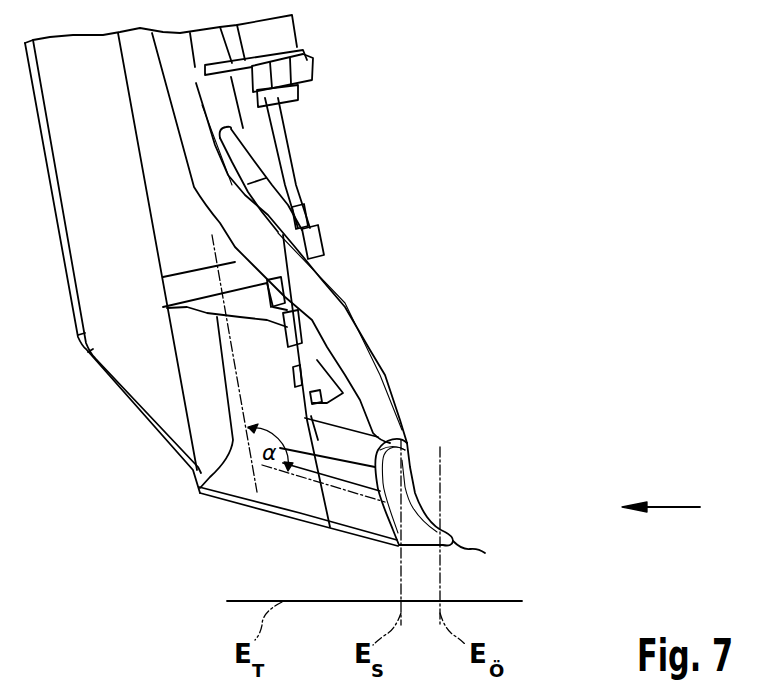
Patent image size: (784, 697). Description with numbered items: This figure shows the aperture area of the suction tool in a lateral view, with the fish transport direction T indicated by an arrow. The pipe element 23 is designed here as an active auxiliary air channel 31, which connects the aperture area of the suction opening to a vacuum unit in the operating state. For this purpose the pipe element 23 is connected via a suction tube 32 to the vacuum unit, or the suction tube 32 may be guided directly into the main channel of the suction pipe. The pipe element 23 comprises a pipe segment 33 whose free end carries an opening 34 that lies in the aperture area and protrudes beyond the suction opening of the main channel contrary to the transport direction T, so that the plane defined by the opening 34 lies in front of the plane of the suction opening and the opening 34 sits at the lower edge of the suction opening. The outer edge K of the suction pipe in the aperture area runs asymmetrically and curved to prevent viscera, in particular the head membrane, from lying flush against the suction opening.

The pipe element 23 is at (417, 474).
The active auxiliary air channel 31 is at (383, 485).
The suction tube 32 is at (343, 307).
The pipe segment 33 is at (393, 498).
The opening 34 is at (485, 553).
The outer edge K is at (409, 441).
The transport direction T is at (668, 507).